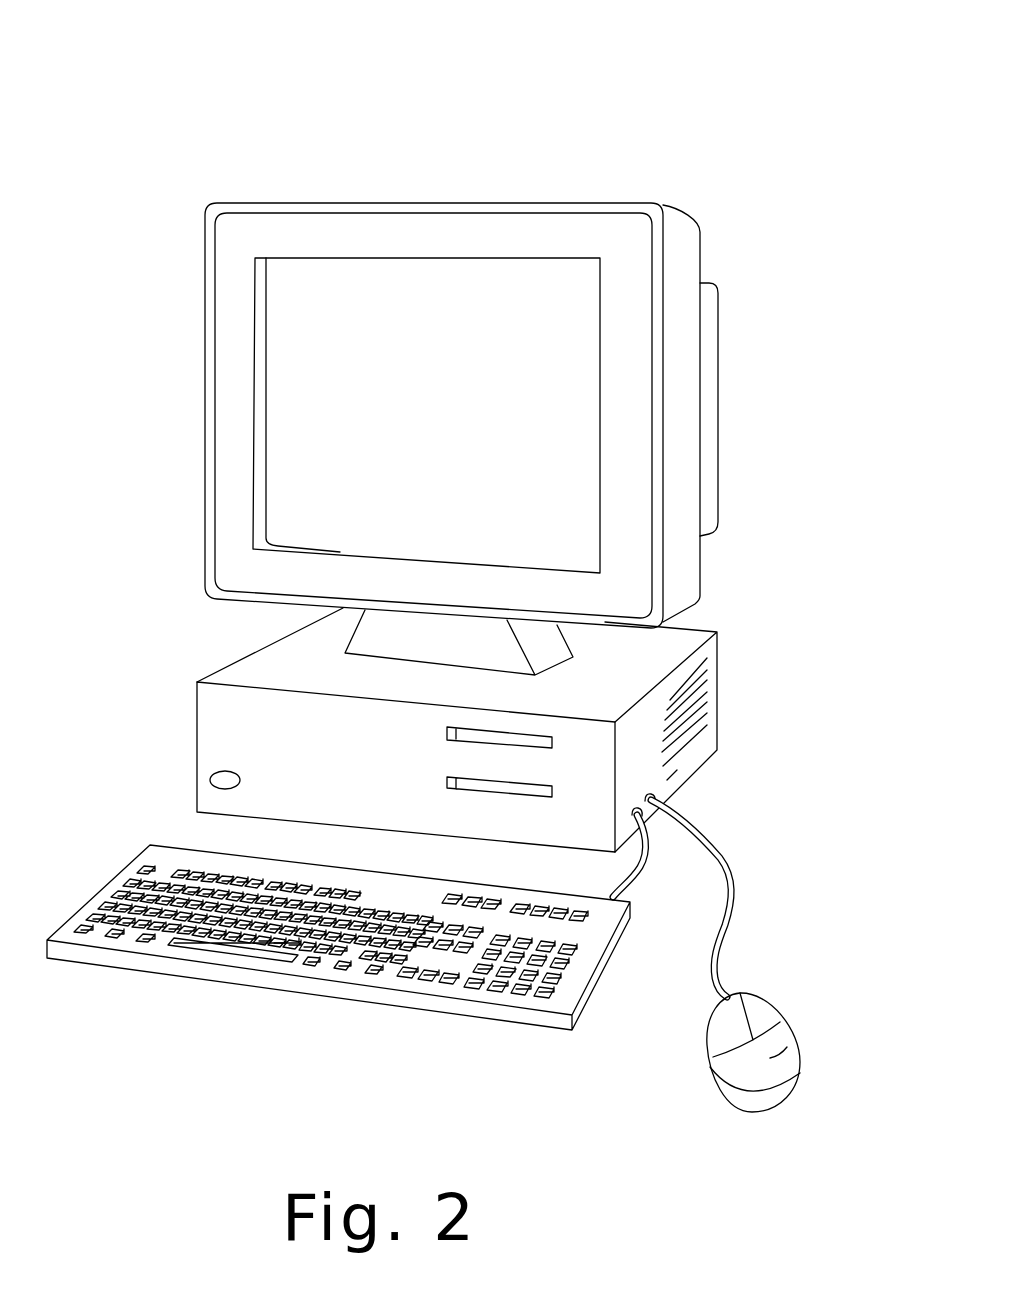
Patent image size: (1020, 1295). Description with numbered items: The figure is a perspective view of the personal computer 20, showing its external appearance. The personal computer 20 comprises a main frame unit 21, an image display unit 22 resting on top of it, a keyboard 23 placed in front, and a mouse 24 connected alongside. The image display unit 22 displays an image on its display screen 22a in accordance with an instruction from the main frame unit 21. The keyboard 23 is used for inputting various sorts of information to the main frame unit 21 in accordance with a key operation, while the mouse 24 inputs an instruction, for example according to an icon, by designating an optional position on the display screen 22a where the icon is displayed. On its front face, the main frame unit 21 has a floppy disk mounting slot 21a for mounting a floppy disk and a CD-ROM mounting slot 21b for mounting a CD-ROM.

The personal computer 20 is at (626, 126).
The main frame unit 21 is at (683, 722).
The floppy disk mounting slot 21a is at (447, 730).
The CD-ROM mounting slot 21b is at (447, 779).
The image display unit 22 is at (680, 345).
The display screen 22a is at (545, 425).
The keyboard 23 is at (263, 953).
The mouse 24 is at (795, 1037).